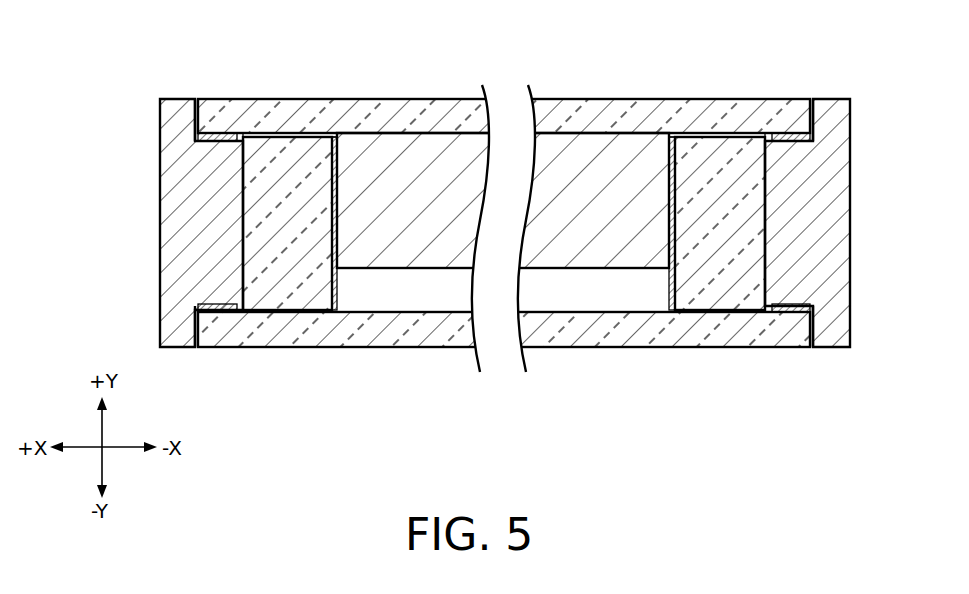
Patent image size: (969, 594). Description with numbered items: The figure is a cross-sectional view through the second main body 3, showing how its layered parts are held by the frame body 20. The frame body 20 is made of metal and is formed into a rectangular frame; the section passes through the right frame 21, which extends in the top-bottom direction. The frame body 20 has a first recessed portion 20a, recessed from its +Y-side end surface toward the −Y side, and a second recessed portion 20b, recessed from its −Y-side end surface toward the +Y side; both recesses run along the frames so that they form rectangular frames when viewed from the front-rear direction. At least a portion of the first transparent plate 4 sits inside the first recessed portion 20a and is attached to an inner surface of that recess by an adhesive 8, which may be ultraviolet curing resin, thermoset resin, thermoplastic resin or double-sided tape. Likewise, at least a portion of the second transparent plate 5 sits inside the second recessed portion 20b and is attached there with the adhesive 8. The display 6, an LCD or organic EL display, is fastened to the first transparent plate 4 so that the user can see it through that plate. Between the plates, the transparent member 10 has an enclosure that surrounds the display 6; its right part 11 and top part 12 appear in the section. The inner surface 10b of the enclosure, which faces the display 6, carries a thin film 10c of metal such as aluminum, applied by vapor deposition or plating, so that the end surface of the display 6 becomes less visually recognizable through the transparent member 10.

The semiconductor device 3 is at (130, 102).
The first transparent plate 4 is at (683, 344).
The second transparent plate 5 is at (707, 112).
The display 6 is at (606, 152).
The adhesive 8 is at (222, 136).
The transparent member 10 is at (504, 225).
The inner surface 10b is at (335, 288).
The thin film 10c is at (336, 163).
The right part 11 is at (735, 292).
The top part 12 is at (307, 153).
The frame body 20 is at (176, 88).
The first recessed portion 20a is at (197, 113).
The second recessed portion 20b is at (197, 333).
The right frame 21 is at (833, 213).